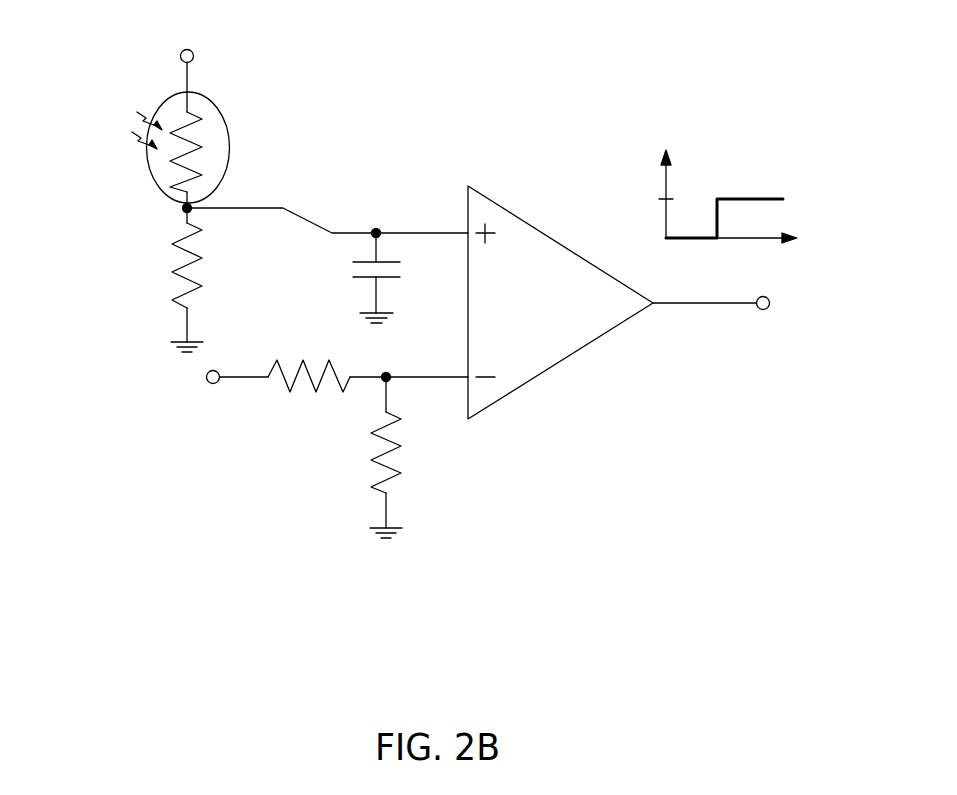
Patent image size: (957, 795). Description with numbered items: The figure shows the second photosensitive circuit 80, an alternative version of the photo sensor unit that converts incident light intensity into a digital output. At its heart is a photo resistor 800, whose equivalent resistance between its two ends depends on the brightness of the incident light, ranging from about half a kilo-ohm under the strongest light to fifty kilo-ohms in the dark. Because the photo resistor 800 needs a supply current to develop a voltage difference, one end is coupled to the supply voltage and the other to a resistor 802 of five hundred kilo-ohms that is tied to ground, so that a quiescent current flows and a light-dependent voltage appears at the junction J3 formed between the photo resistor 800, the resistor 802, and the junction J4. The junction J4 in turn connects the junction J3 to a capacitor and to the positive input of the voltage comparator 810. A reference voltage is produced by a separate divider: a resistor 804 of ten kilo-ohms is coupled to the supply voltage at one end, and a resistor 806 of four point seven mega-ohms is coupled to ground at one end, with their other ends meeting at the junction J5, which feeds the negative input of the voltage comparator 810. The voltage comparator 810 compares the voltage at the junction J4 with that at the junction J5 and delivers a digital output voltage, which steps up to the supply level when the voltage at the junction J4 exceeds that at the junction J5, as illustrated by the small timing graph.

The second photosensitive circuit 80 is at (452, 276).
The photo resistor 800 is at (148, 163).
The resistor 802 is at (170, 270).
The resistor 804 is at (307, 366).
The resistor 806 is at (401, 452).
The voltage comparator 810 is at (398, 278).
The junction J3 is at (192, 207).
The junction J4 is at (379, 229).
The junction J5 is at (391, 375).